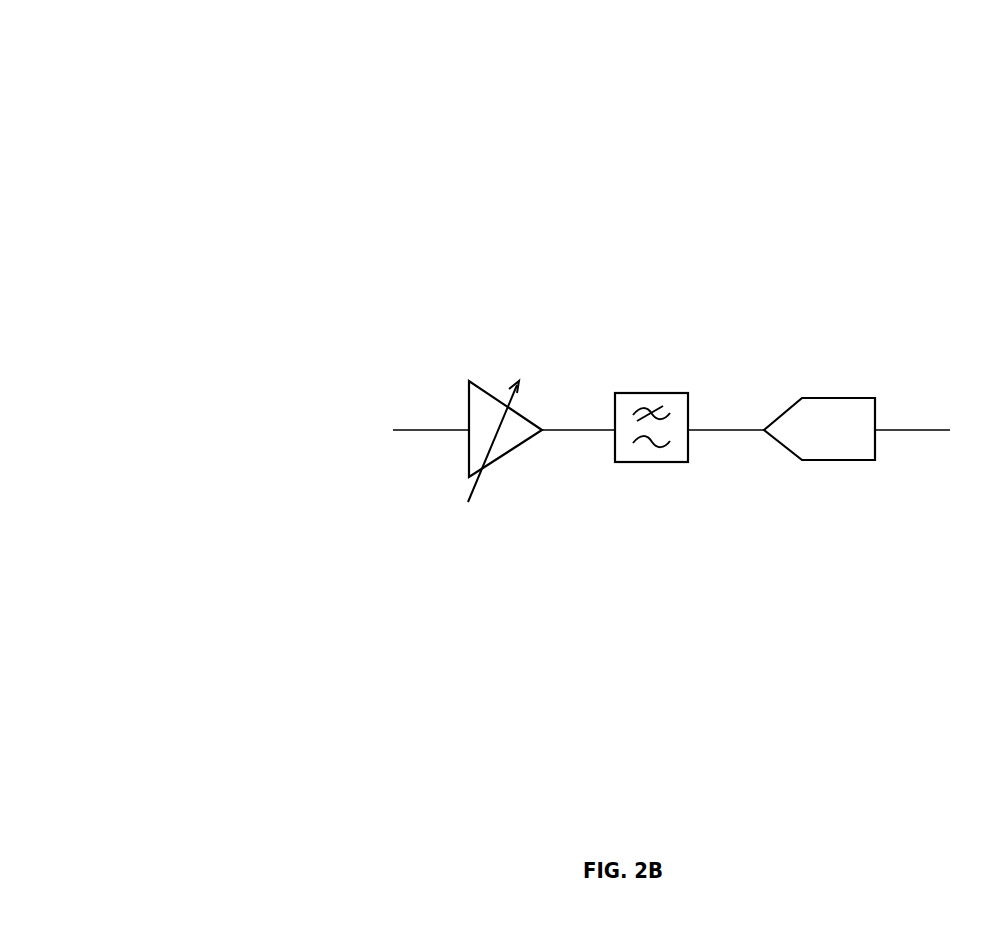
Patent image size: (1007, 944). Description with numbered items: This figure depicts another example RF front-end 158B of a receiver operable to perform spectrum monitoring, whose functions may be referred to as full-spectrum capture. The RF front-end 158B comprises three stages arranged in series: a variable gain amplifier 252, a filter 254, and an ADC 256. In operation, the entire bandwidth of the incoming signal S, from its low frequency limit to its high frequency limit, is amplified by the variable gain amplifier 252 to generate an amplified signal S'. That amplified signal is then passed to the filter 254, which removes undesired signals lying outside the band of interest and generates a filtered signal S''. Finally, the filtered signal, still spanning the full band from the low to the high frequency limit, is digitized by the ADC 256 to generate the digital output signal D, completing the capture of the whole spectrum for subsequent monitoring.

The RF front-end 158B is at (136, 108).
The variable gain amplifier 252 is at (512, 449).
The filter 254 is at (662, 462).
The ADC 256 is at (828, 460).